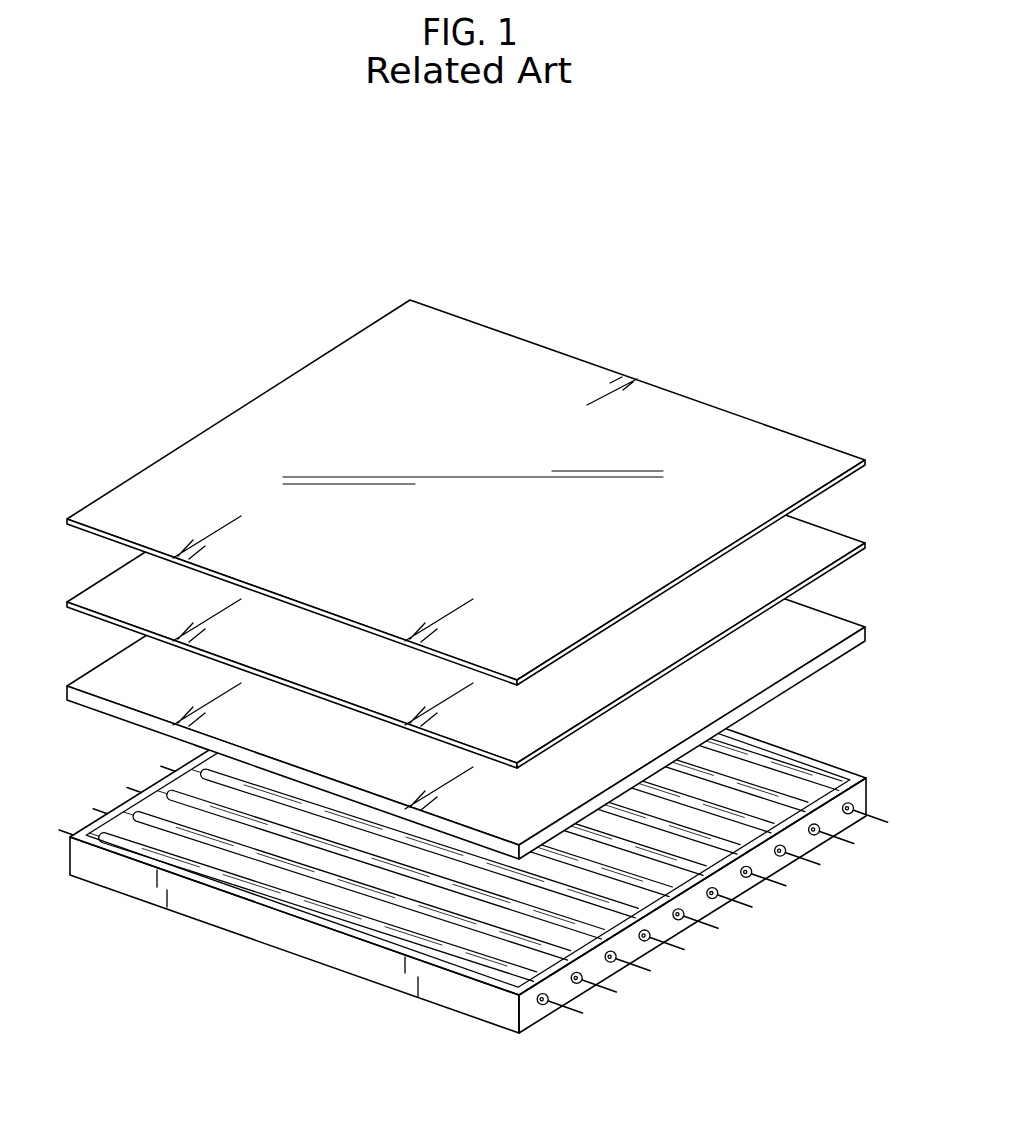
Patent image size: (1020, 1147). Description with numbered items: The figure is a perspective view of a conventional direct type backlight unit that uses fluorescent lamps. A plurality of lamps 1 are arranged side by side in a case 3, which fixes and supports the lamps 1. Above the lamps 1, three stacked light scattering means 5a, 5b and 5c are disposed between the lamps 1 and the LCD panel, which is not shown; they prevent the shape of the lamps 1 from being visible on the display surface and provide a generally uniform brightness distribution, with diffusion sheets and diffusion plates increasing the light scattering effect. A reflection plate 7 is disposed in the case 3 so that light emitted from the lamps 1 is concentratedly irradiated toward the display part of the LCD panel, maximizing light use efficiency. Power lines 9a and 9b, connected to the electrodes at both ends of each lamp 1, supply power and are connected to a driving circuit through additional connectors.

The lamp 1 is at (310, 884).
The case 3 is at (498, 1010).
The light scattering means 5a is at (812, 619).
The light scattering means 5b is at (812, 535).
The light scattering means 5c is at (812, 452).
The reflection plate 7 is at (407, 908).
The power line 9a is at (55, 833).
The power line 9b is at (583, 1016).